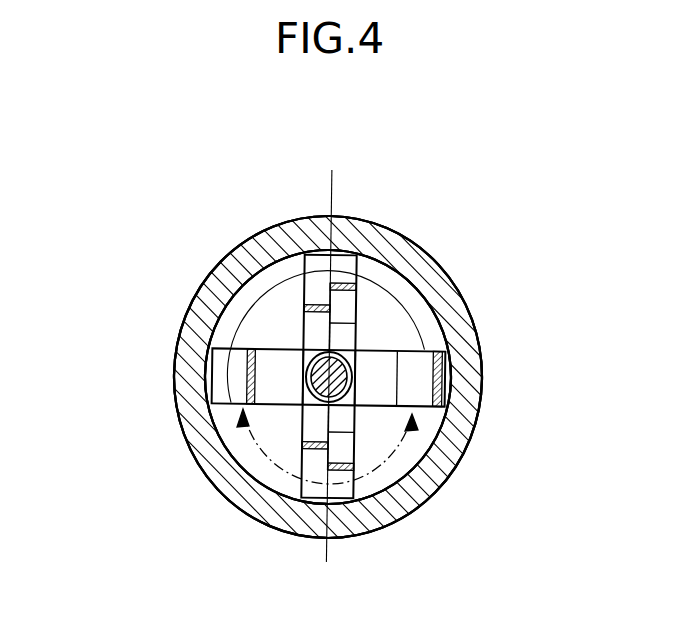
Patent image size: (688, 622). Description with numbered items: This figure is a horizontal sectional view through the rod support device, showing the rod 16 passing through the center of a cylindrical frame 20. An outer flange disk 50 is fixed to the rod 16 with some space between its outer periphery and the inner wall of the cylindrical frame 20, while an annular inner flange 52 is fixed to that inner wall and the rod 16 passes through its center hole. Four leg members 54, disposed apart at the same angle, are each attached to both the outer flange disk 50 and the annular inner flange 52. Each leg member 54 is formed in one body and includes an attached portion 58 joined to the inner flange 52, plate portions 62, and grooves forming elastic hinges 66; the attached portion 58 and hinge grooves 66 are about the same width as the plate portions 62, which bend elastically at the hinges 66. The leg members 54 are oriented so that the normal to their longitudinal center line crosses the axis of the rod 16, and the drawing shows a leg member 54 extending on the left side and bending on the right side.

The rod 16 is at (343, 370).
The cylindrical frame 20 is at (392, 243).
The outer flange disk 50 is at (394, 352).
The annular inner flange 52 is at (290, 238).
The leg member 54 is at (243, 420).
The attached portion 58 is at (208, 315).
The plate portion 62 is at (268, 259).
The elastic hinge groove 66 is at (233, 300).